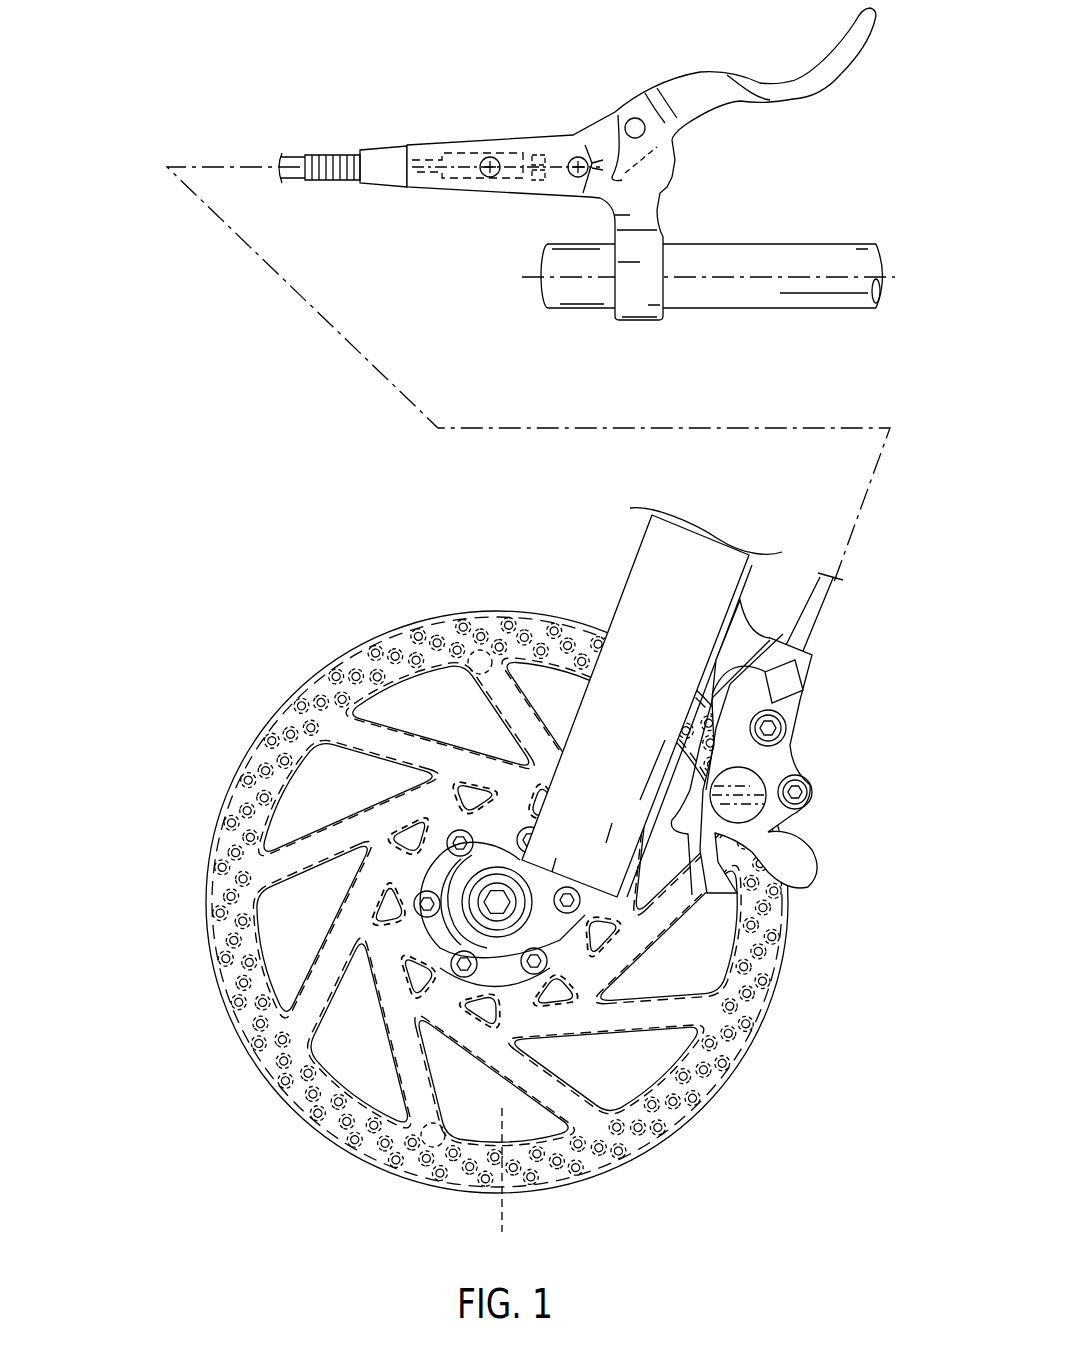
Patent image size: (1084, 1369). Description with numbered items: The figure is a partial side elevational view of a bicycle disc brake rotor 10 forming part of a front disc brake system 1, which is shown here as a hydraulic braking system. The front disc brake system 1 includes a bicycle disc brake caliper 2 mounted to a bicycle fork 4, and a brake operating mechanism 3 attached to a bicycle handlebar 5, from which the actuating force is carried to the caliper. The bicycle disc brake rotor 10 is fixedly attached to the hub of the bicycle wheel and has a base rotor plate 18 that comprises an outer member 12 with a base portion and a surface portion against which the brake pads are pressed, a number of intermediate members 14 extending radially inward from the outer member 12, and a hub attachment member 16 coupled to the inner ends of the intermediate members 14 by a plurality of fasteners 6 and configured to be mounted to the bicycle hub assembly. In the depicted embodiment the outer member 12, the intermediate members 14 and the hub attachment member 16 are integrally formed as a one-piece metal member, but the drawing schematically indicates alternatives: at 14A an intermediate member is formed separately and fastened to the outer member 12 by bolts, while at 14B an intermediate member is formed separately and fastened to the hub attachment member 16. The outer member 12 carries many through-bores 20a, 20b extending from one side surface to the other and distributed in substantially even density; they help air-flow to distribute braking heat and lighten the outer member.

The front disc brake system 1 is at (274, 489).
The bicycle disc brake caliper 2 is at (806, 822).
The brake operating mechanism 3 is at (599, 108).
The bicycle fork 4 is at (634, 570).
The bicycle handlebar 5 is at (778, 246).
The fasteners 6 is at (538, 976).
The bicycle disc brake rotor 10 is at (389, 611).
The outer member 12 is at (266, 715).
The intermediate members 14 is at (330, 830).
The intermediate member fastened to the outer member 14A is at (474, 634).
The intermediate member fastened to the hub attachment member 14B is at (432, 1165).
The hub attachment member 16 is at (394, 901).
The base rotor plate 18 is at (158, 682).
The through-bore 20a is at (257, 1041).
The through-bore 20b is at (312, 1111).